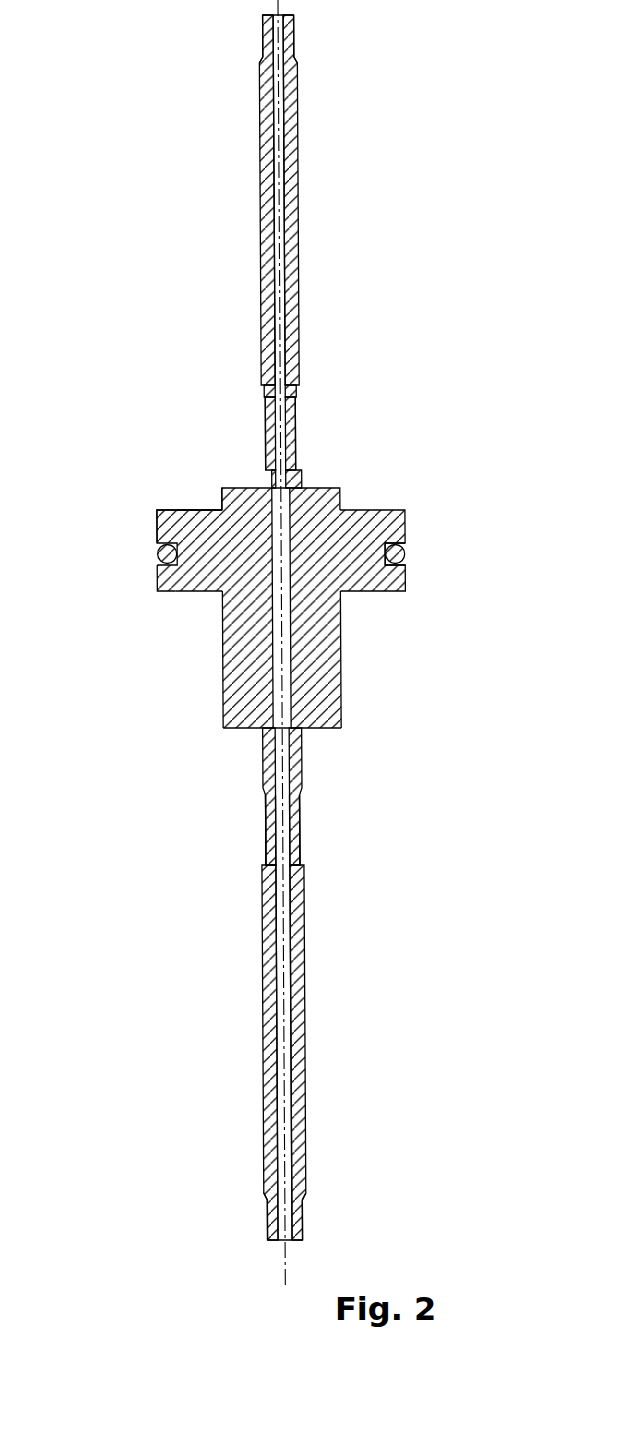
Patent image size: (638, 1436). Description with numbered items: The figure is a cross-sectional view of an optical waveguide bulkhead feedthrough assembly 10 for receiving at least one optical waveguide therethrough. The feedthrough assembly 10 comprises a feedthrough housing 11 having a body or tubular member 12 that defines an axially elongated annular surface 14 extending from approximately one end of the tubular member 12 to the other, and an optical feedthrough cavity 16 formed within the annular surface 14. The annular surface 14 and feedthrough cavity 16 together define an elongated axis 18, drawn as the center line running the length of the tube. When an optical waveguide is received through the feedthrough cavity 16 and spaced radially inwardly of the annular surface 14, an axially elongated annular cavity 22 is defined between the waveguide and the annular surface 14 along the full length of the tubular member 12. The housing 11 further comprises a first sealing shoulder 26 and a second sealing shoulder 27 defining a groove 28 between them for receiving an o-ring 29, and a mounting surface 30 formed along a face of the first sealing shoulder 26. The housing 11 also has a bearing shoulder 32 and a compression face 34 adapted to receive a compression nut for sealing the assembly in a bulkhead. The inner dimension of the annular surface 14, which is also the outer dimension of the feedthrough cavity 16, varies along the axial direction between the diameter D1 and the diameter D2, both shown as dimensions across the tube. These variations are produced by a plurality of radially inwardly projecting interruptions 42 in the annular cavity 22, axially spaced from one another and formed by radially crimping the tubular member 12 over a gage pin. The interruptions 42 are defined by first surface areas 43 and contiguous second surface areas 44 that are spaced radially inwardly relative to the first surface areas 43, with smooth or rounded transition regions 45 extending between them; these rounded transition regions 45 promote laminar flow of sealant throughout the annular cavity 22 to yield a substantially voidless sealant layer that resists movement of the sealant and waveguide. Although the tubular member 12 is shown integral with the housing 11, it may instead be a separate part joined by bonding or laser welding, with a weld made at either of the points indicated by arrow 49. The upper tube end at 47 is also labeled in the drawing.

The optical waveguide bulkhead feedthrough assembly 10 is at (122, 538).
The feedthrough housing 11 is at (314, 648).
The tubular member 12 is at (259, 236).
The annular surface 14 is at (277, 929).
The optical feedthrough cavity 16 is at (275, 126).
The elongated axis 18 is at (281, 1241).
The annular cavity 22 is at (273, 552).
The first sealing shoulder 26 is at (167, 527).
The second sealing shoulder 27 is at (160, 586).
The groove 28 is at (406, 548).
The o-ring 29 is at (157, 558).
The mounting surface 30 is at (200, 505).
The bearing shoulder 32 is at (223, 722).
The compression face 34 is at (183, 594).
The radially inwardly projecting interruptions 42 is at (269, 28).
The first surface areas 43 is at (300, 391).
The second surface areas 44 is at (290, 836).
The transition regions 45 is at (300, 471).
The upper tube end face 47 is at (302, 35).
The weld points 49 is at (248, 477).
The diameter D1 is at (220, 1226).
The diameter D2 is at (350, 1069).